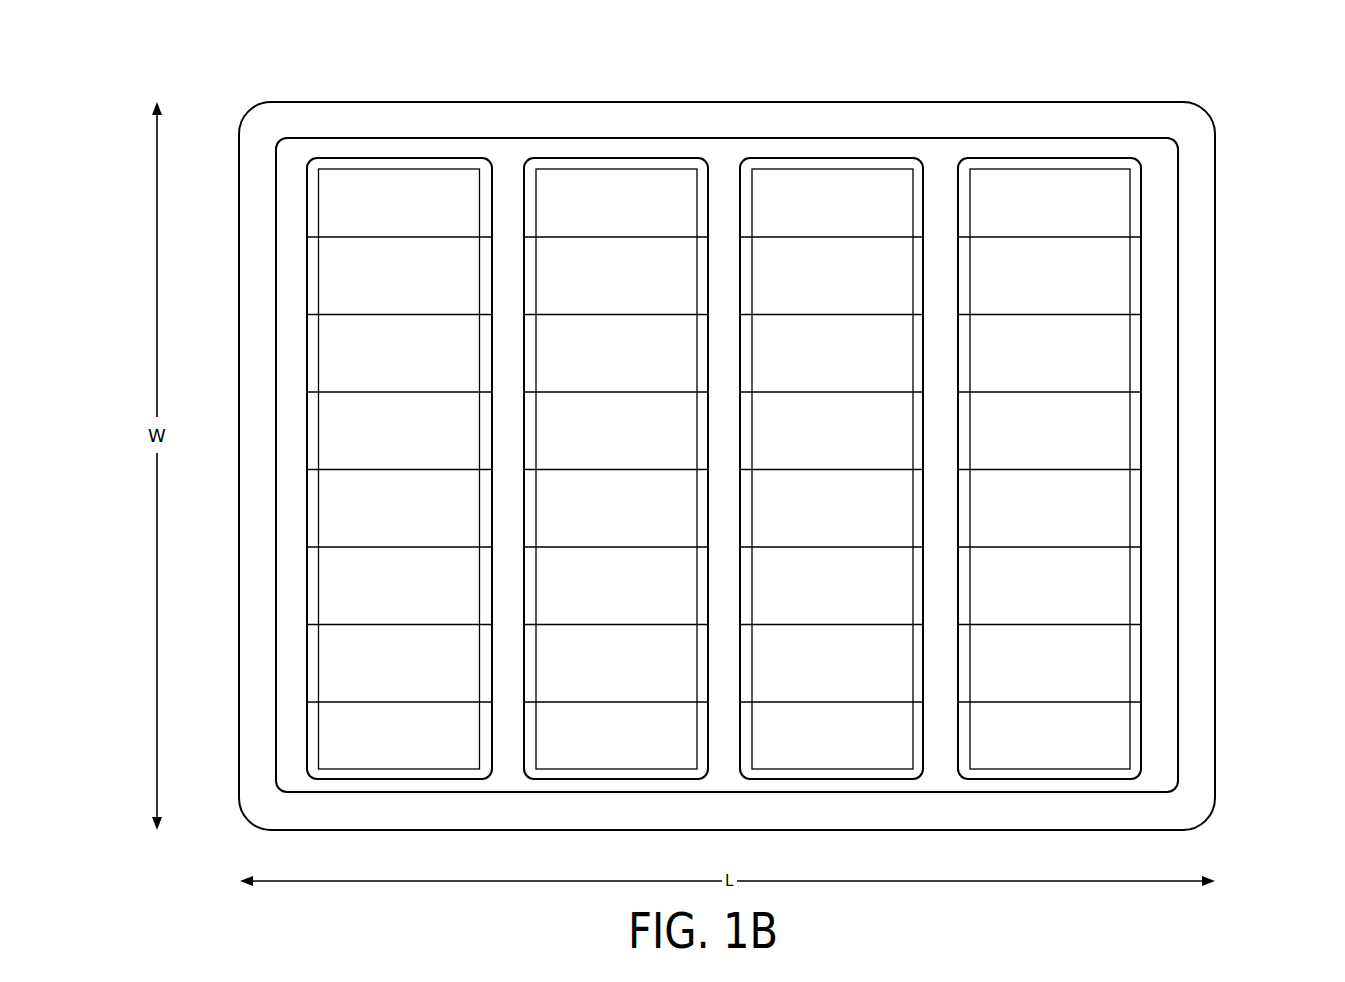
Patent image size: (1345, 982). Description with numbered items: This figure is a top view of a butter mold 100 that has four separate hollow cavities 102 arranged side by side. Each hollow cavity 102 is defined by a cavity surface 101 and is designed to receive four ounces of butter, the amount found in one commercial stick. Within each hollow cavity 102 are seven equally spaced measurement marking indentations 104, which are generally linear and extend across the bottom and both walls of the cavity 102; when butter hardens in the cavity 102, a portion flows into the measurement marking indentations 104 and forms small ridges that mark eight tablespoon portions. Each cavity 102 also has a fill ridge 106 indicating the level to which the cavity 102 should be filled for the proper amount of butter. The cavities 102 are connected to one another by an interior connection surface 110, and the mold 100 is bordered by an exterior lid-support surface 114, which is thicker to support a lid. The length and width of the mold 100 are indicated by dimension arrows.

The mold 100 is at (253, 58).
The cavity surface 101 is at (985, 187).
The hollow cavity 102 is at (1064, 188).
The measurement marking indentation 104 is at (1112, 235).
The fill ridge 106 is at (748, 168).
The interior connection surface 110 is at (507, 168).
The exterior lid-support surface 114 is at (1150, 118).